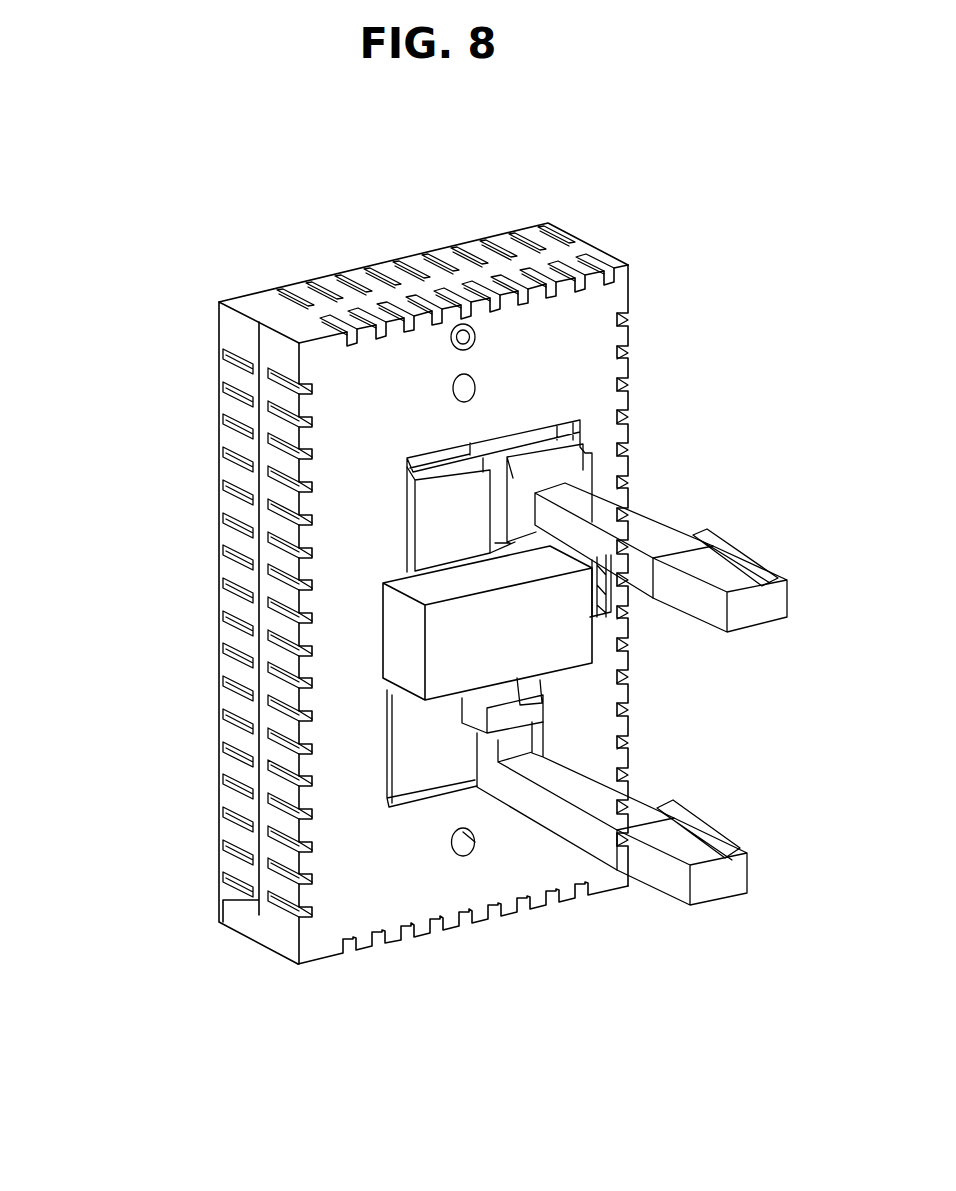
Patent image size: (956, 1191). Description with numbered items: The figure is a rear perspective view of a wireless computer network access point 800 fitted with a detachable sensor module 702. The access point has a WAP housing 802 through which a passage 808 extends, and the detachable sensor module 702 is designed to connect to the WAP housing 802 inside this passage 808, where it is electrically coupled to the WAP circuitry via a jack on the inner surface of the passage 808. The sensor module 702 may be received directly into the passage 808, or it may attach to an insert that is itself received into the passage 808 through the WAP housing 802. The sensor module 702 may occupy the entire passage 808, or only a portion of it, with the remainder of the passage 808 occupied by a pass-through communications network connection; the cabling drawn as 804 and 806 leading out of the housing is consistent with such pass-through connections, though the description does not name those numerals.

The wireless computer network access point 800 is at (690, 143).
The WAP housing 802 is at (417, 250).
The passage 808 is at (470, 441).
The detachable sensor module 702 is at (446, 521).
The first cable with plug 804 is at (678, 518).
The second cable with plug 806 is at (630, 798).